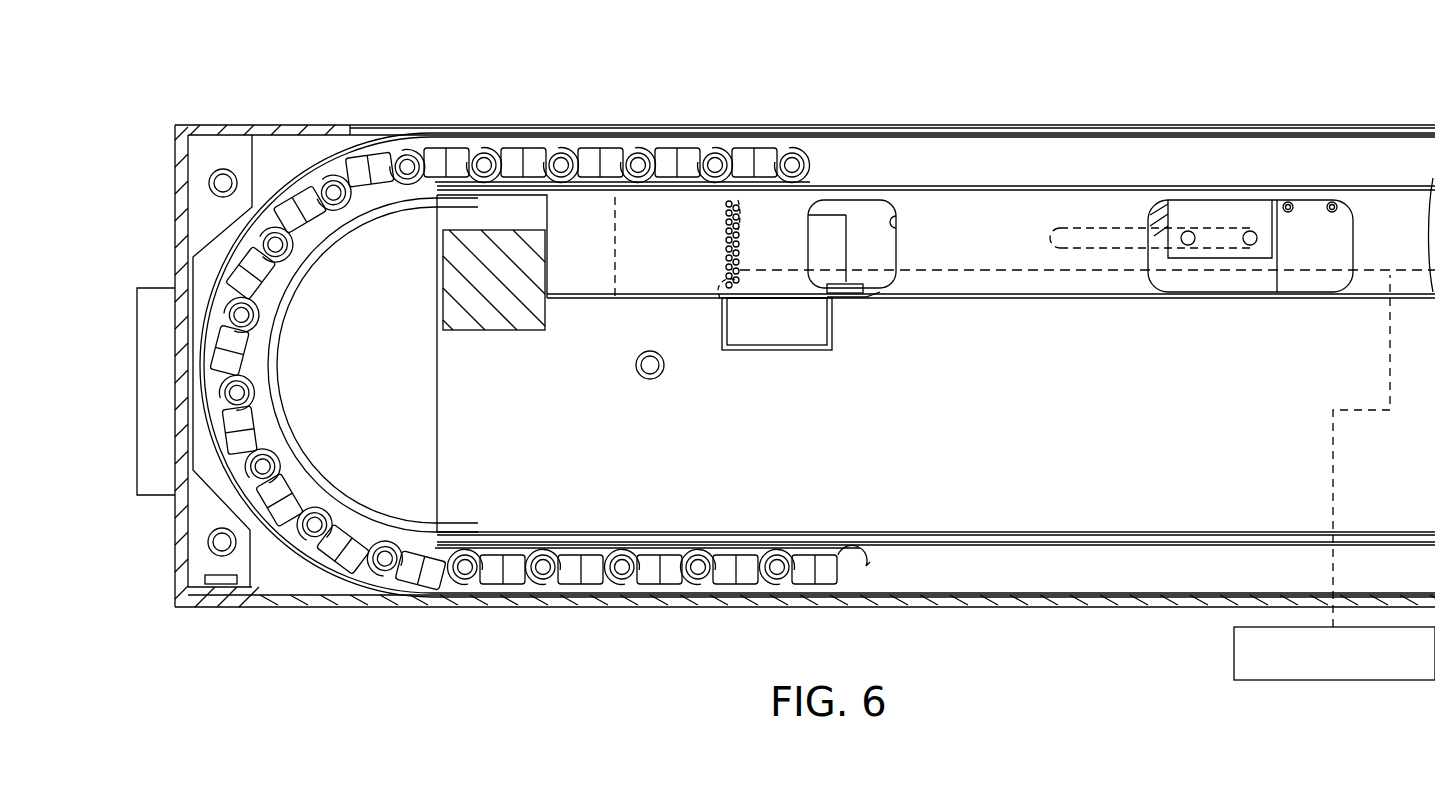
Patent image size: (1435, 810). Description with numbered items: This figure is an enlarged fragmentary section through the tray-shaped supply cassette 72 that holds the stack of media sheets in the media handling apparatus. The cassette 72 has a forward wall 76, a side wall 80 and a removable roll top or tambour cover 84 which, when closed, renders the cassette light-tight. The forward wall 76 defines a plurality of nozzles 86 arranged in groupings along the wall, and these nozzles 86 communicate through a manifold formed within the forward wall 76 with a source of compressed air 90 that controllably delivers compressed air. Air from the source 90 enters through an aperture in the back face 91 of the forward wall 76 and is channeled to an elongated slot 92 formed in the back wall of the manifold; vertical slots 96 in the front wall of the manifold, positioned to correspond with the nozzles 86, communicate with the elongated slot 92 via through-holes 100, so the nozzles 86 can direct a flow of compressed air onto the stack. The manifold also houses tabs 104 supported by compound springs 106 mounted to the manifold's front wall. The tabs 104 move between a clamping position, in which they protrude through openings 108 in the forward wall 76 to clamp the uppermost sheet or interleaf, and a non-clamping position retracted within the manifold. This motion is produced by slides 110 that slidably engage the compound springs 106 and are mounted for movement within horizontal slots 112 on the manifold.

The supply cassette 72 is at (368, 112).
The forward wall 76 is at (400, 127).
The side wall 80 is at (176, 207).
The tambour cover 84 is at (488, 147).
The nozzles 86 is at (724, 250).
The source of compressed air 90 is at (1233, 663).
The back face 91 is at (673, 127).
The elongated slot 92 is at (945, 278).
The vertical slots 96 is at (738, 232).
The through-holes 100 is at (728, 300).
The tabs 104 is at (855, 298).
The compound springs 106 is at (884, 303).
The openings 108 is at (893, 220).
The slides 110 is at (1187, 215).
The horizontal slots 112 is at (1053, 228).